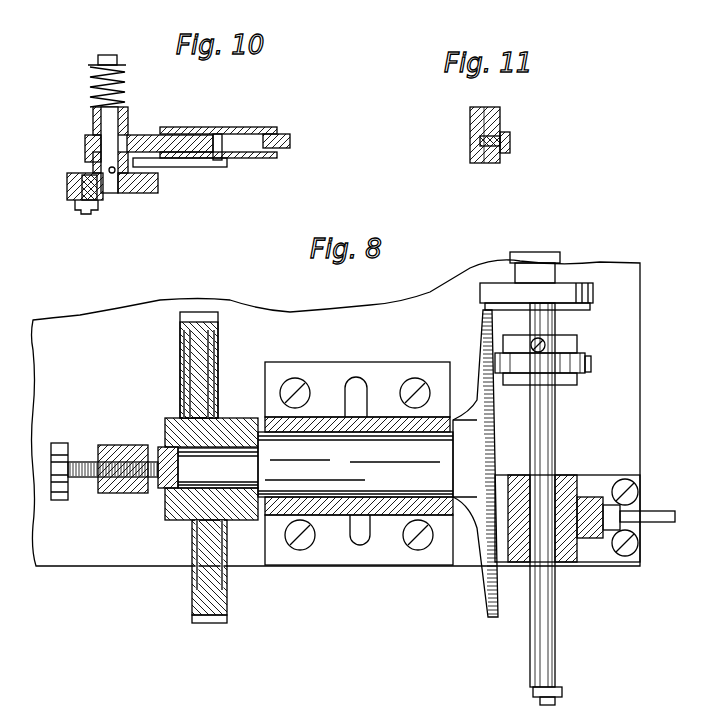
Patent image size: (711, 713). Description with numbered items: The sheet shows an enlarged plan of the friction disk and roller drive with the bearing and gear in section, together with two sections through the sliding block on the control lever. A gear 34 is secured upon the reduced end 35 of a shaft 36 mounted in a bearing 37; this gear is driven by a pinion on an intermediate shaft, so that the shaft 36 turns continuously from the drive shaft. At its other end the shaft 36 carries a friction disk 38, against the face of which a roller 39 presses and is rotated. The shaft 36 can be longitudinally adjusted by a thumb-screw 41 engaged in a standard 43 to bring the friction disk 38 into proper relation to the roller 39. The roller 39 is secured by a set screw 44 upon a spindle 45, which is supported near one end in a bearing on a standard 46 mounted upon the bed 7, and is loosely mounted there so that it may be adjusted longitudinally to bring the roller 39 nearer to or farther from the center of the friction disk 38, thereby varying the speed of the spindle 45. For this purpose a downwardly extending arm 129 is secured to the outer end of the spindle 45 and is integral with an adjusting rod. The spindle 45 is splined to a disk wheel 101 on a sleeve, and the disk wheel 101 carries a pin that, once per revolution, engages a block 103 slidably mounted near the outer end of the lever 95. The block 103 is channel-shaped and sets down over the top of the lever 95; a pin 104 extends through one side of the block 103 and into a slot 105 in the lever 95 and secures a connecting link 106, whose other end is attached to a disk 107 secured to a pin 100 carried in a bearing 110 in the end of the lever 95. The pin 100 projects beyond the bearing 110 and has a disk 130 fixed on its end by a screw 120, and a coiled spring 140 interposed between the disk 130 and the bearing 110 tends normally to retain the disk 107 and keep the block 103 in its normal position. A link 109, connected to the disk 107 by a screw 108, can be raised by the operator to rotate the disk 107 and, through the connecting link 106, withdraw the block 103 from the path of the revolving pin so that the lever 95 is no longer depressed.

In FIG. 8, the bed 7 is at (622, 408).
In FIG. 8, the gear 34 is at (195, 600).
In FIG. 8, the reduced end 35 is at (168, 500).
In FIG. 8, the shaft 36 is at (338, 485).
In FIG. 8, the bearing 37 is at (378, 378).
In FIG. 8, the friction disk 38 is at (476, 352).
In FIG. 8, the roller 39 is at (590, 362).
In FIG. 8, the thumb-screw 41 is at (82, 478).
In FIG. 8, the standard 43 is at (118, 445).
In FIG. 8, the set screw 44 is at (548, 345).
In FIG. 8, the spindle 45 is at (555, 437).
In FIG. 8, the standard 46 is at (565, 478).
In FIG. 11, the lever 95 is at (485, 153).
In FIG. 10, the pin 100 is at (88, 154).
In FIG. 8, the disk wheel 101 is at (584, 280).
In FIG. 10, the block 103 is at (255, 122).
In FIG. 11, the block 103 is at (494, 110).
In FIG. 10, the pin 104 is at (218, 134).
In FIG. 11, the pin 104 is at (500, 138).
In FIG. 10, the slot 105 is at (280, 130).
In FIG. 10, the connecting link 106 is at (198, 168).
In FIG. 11, the connecting link 106 is at (510, 143).
In FIG. 10, the disk 107 is at (152, 191).
In FIG. 10, the screw 108 is at (84, 212).
In FIG. 10, the link 109 is at (68, 200).
In FIG. 10, the bearing 110 is at (93, 133).
In FIG. 10, the screw 120 is at (108, 55).
In FIG. 8, the arm 129 is at (562, 692).
In FIG. 10, the disk 130 is at (90, 68).
In FIG. 10, the coiled spring 140 is at (124, 90).